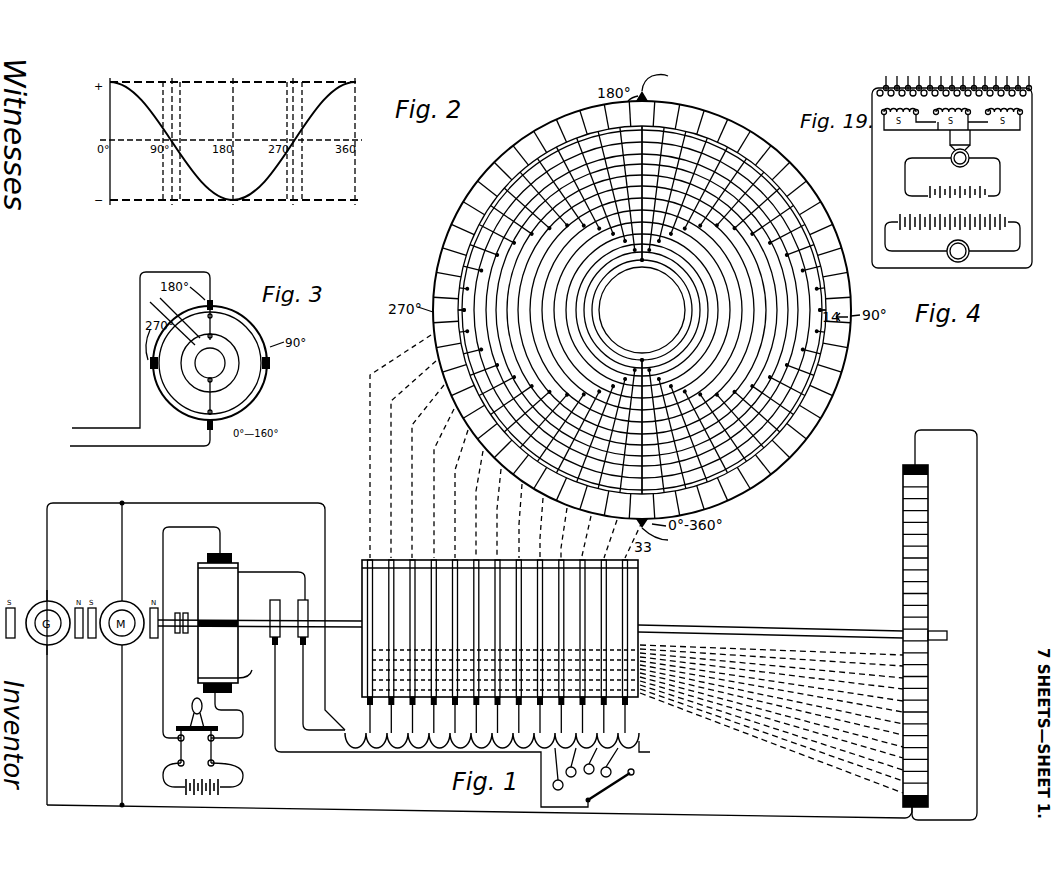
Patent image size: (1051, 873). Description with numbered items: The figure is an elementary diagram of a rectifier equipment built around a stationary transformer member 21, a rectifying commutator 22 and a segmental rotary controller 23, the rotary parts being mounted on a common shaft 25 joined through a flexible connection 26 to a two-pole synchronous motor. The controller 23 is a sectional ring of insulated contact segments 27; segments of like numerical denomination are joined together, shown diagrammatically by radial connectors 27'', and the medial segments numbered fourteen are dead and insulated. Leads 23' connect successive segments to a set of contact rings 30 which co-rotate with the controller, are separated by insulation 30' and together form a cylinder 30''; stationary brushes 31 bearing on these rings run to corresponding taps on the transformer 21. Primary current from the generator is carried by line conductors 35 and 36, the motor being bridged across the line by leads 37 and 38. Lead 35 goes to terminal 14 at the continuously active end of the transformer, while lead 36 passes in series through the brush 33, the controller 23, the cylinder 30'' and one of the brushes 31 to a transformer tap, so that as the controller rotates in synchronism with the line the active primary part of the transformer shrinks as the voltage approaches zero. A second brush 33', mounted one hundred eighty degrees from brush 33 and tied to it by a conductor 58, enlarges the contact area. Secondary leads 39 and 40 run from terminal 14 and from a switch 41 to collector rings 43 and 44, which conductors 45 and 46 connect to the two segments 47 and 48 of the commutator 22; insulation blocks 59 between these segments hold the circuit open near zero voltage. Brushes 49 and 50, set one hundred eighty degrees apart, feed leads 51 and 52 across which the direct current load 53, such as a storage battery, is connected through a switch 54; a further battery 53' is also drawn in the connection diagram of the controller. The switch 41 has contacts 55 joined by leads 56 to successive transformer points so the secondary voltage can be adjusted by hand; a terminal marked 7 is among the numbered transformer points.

In FIG. 19, the transformer member 21 is at (954, 80).
In FIG. 3, the rectifying commutator 22 is at (240, 318).
In FIG. 1, the rectifying commutator 22 is at (198, 592).
In FIG. 19, the rectifying commutator 22 is at (968, 207).
In FIG. 2, the segmental rotary controller 23 is at (642, 307).
In FIG. 4, the segmental rotary controller 23 is at (899, 636).
In FIG. 2, the leads 23' is at (486, 446).
In FIG. 1, the leads 23' is at (771, 719).
In FIG. 1, the common shaft 25 is at (348, 628).
In FIG. 4, the common shaft 25 is at (820, 630).
In FIG. 1, the flexible connection 26 is at (185, 612).
In FIG. 2, the contact segments 27 is at (641, 309).
In FIG. 1, the contact segments 27 is at (492, 748).
In FIG. 4, the contact segments 27 is at (905, 635).
In FIG. 2, the radial connectors 27'' is at (434, 215).
In FIG. 1, the contact rings 30 is at (516, 628).
In FIG. 1, the insulation 30' is at (376, 588).
In FIG. 1, the cylinder 30'' is at (361, 549).
In FIG. 1, the stationary brushes 31 is at (389, 703).
In FIG. 2, the brush 33 is at (665, 91).
In FIG. 4, the brush 33 is at (895, 804).
In FIG. 4, the second brush 33' is at (910, 461).
In FIG. 1, the line conductor 35 is at (58, 504).
In FIG. 19, the line conductor 35 is at (868, 93).
In FIG. 2, the line conductor 36 is at (662, 534).
In FIG. 1, the line conductor 36 is at (60, 805).
In FIG. 4, the line conductor 36 is at (805, 818).
In FIG. 1, the lead 37 is at (122, 532).
In FIG. 1, the lead 38 is at (122, 676).
In FIG. 1, the lead 39 is at (303, 722).
In FIG. 19, the lead 39 is at (872, 166).
In FIG. 1, the lead 40 is at (278, 752).
In FIG. 19, the lead 40 is at (1032, 146).
In FIG. 1, the switch 41 is at (616, 788).
In FIG. 1, the collector ring 43 is at (300, 648).
In FIG. 1, the collector ring 44 is at (272, 647).
In FIG. 1, the conductor 45 is at (262, 572).
In FIG. 1, the conductor 46 is at (252, 672).
In FIG. 3, the segment 47 is at (262, 330).
In FIG. 1, the segment 47 is at (232, 590).
In FIG. 3, the segment 48 is at (222, 412).
In FIG. 1, the segment 48 is at (206, 660).
In FIG. 3, the brush 49 is at (214, 302).
In FIG. 1, the brush 49 is at (226, 553).
In FIG. 3, the brush 50 is at (207, 426).
In FIG. 1, the brush 50 is at (203, 688).
In FIG. 3, the lead 51 is at (140, 407).
In FIG. 1, the lead 51 is at (163, 700).
In FIG. 3, the lead 52 is at (145, 447).
In FIG. 1, the lead 52 is at (243, 720).
In FIG. 1, the direct current load 53 is at (201, 781).
In FIG. 19, the direct current load 53 is at (952, 232).
In FIG. 19, the battery 53' is at (952, 178).
In FIG. 1, the switch 54 is at (197, 732).
In FIG. 1, the contacts 55 is at (585, 769).
In FIG. 2, the leads 56 is at (663, 76).
In FIG. 1, the leads 56 is at (648, 750).
In FIG. 4, the conductor 58 is at (977, 672).
In FIG. 3, the insulation blocks 59 is at (150, 363).
In FIG. 1, the insulation blocks 59 is at (212, 626).
In FIG. 19, the terminal 14 is at (878, 91).
In FIG. 19, the terminal 7 is at (1029, 88).